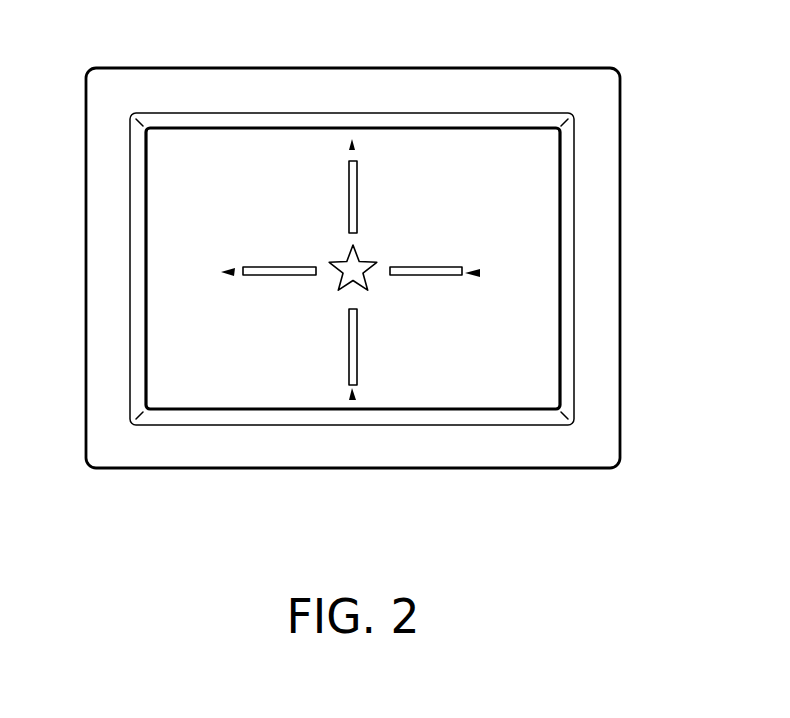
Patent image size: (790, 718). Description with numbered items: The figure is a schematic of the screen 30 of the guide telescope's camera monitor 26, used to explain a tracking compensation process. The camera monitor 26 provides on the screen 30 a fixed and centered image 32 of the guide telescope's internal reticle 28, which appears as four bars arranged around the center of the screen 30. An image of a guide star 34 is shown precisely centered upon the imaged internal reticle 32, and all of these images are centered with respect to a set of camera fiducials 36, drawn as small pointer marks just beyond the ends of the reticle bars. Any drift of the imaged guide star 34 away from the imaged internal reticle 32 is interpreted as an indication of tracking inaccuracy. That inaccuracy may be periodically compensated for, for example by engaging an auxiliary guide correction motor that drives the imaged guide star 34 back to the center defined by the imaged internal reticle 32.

The camera monitor 26 is at (243, 68).
The internal reticle 28 is at (348, 201).
The screen 30 is at (540, 288).
The imaged internal reticle 32 is at (432, 216).
The guide star image 34 is at (357, 290).
The camera fiducials 36 is at (353, 150).